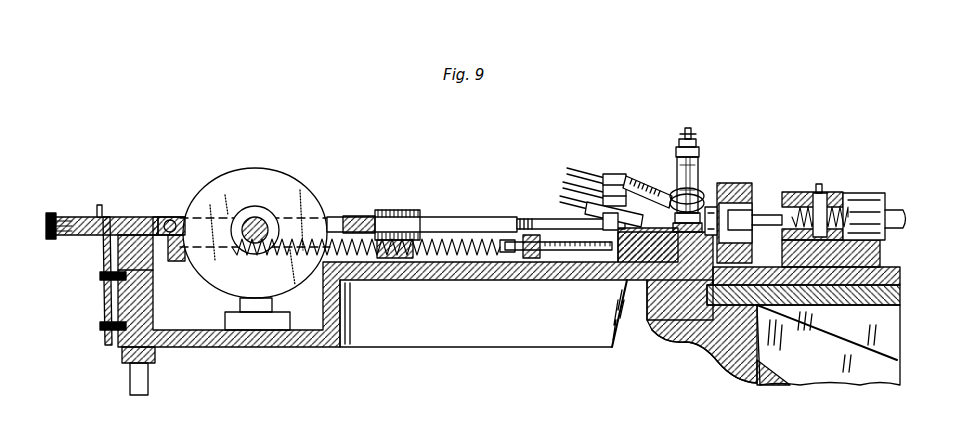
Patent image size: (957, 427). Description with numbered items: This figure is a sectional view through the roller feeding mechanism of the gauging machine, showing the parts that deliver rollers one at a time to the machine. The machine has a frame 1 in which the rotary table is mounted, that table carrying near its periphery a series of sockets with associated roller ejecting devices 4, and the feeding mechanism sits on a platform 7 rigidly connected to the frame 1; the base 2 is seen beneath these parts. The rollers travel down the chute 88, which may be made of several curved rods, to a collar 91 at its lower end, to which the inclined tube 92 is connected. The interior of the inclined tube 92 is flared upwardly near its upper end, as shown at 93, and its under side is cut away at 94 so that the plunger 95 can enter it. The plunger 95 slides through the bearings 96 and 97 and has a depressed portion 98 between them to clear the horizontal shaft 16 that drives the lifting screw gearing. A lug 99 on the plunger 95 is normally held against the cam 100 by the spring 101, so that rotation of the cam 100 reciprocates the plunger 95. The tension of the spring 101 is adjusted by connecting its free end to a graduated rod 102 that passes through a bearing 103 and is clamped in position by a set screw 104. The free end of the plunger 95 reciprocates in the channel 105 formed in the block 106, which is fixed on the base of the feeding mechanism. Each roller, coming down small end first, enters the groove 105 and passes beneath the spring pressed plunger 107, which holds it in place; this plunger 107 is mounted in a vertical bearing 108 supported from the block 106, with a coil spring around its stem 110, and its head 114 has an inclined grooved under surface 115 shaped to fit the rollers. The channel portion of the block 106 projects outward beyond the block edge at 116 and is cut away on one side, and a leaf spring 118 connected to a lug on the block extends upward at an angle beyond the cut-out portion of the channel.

The frame 1 is at (708, 352).
The base 2 is at (887, 268).
The roller ejecting devices 4 is at (870, 192).
The platform 7 is at (435, 328).
The horizontal shaft 16 is at (243, 222).
The chute 88 is at (598, 171).
The collar 91 is at (609, 186).
The inclined tube 92 is at (638, 190).
The flared interior 93 is at (628, 182).
The cut-away portion 94 is at (603, 302).
The plunger 95 is at (480, 221).
The bearing 96 is at (380, 218).
The bearing 97 is at (133, 214).
The depressed portion 98 is at (174, 262).
The lug 99 is at (177, 217).
The cam 100 is at (290, 188).
The spring 101 is at (373, 253).
The graduated rod 102 is at (520, 252).
The bearing 103 is at (545, 257).
The set screw 104 is at (533, 222).
The channel 105 is at (641, 268).
The block 106 is at (598, 217).
The spring pressed plunger 107 is at (704, 200).
The vertical bearing 108 is at (700, 157).
The stem 110 is at (693, 133).
The head 114 is at (748, 180).
The inclined grooved under surface 115 is at (740, 182).
The projected channel portion 116 is at (689, 234).
The leaf spring 118 is at (670, 297).